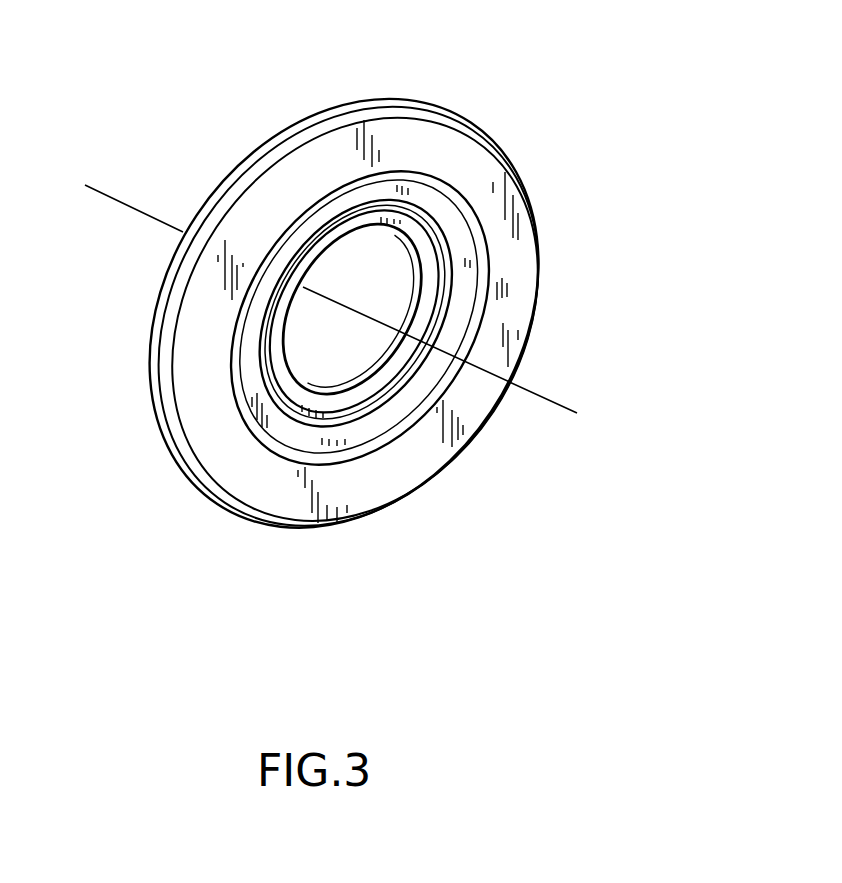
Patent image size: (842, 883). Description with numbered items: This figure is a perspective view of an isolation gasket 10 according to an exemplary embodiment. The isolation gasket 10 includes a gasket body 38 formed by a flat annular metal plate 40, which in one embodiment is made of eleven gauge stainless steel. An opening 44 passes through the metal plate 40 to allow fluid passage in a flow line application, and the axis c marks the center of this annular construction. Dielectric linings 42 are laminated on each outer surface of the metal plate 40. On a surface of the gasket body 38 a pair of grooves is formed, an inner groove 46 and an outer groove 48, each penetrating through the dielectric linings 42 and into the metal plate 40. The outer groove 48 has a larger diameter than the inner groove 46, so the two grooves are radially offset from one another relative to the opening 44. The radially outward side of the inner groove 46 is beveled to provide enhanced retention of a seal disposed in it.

The isolation gasket 10 is at (344, 308).
The gasket body 38 is at (386, 314).
The flat annular metal plate 40 is at (349, 316).
The dielectric linings 42 is at (354, 319).
The opening 44 is at (398, 298).
The inner groove 46 is at (448, 385).
The outer groove 48 is at (505, 259).
The central axis c is at (337, 305).